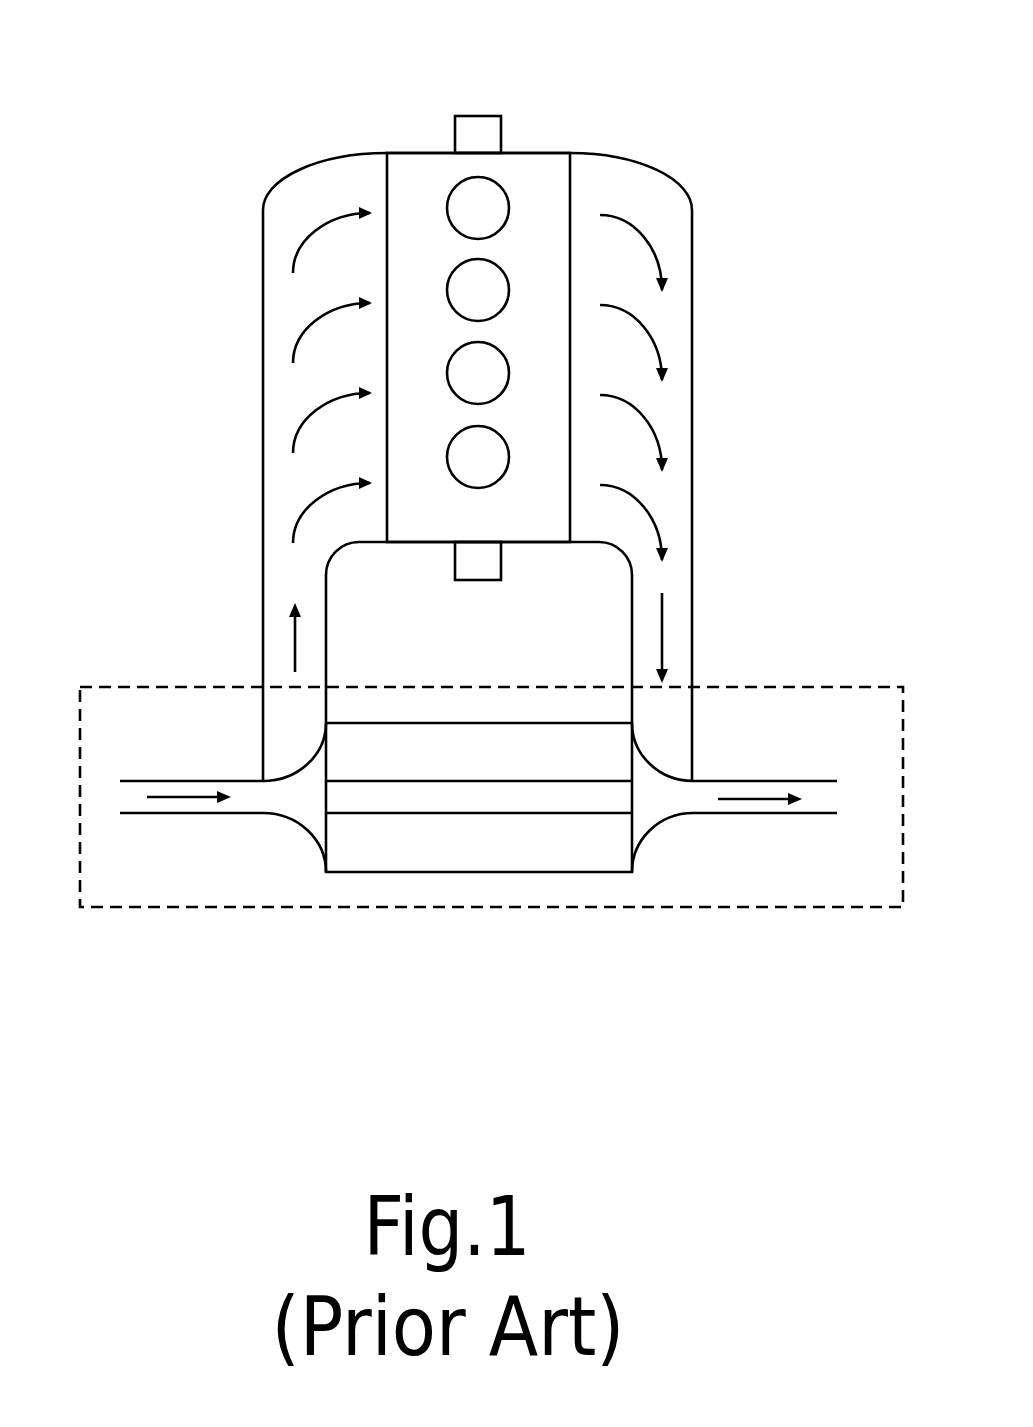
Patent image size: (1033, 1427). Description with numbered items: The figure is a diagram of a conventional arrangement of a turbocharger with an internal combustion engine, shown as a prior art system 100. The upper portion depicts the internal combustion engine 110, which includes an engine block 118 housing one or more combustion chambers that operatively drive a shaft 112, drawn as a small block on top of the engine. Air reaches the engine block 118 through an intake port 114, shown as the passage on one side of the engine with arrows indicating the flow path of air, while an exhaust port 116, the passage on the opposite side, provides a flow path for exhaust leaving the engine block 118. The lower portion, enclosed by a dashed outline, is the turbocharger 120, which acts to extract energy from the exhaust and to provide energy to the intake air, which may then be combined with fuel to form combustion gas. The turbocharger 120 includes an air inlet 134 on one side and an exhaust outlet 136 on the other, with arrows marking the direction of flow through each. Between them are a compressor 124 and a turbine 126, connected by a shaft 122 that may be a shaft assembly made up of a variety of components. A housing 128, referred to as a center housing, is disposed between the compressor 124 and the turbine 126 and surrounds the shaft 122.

The prior art system 100 is at (688, 60).
The internal combustion engine 110 is at (432, 153).
The shaft 112 is at (480, 116).
The intake port 114 is at (287, 168).
The exhaust port 116 is at (685, 193).
The engine block 118 is at (455, 533).
The turbocharger 120 is at (763, 688).
The shaft 122 is at (480, 813).
The compressor 124 is at (302, 828).
The turbine 126 is at (660, 827).
The housing 128 is at (455, 757).
The air inlet 134 is at (215, 779).
The exhaust outlet 136 is at (770, 781).